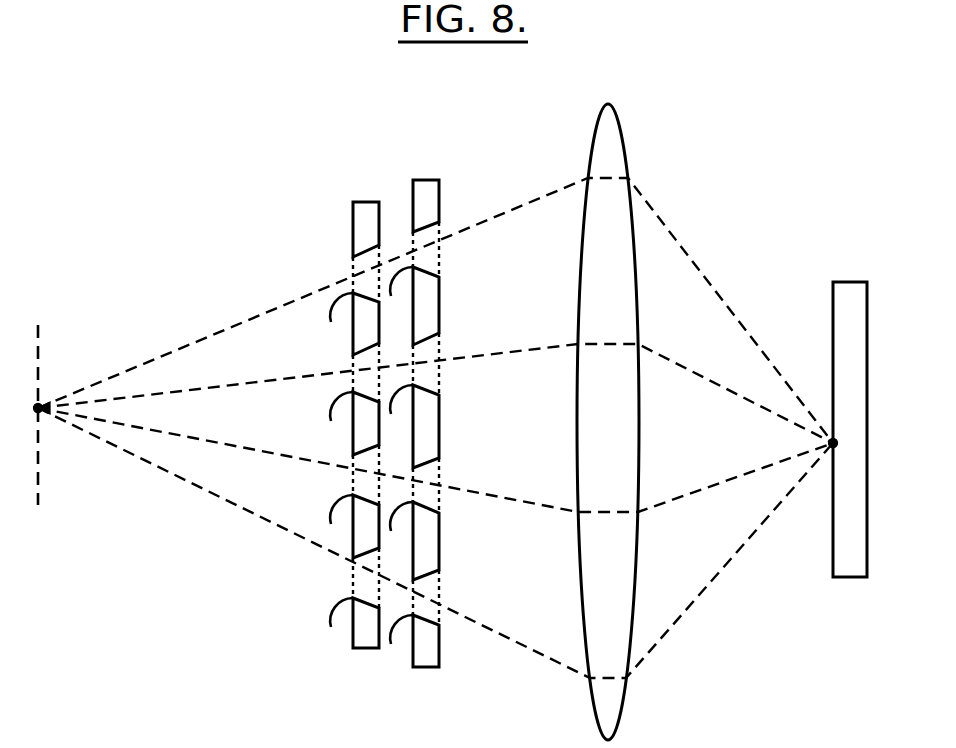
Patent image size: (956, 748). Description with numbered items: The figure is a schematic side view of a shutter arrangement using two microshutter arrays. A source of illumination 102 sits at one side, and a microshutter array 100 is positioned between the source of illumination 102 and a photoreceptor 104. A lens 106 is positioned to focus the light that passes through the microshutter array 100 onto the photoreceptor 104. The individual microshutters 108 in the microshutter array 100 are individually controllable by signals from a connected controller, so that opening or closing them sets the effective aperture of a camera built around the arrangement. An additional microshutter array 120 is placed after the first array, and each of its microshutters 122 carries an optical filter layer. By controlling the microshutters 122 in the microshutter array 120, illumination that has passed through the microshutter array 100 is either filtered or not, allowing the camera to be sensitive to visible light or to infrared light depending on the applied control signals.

The microshutter array 100 is at (307, 454).
The source of illumination 102 is at (40, 406).
The photoreceptor 104 is at (847, 551).
The lens 106 is at (608, 710).
The microshutters 108 is at (331, 500).
The additional microshutter array 120 is at (464, 399).
The microshutters 122 is at (394, 277).